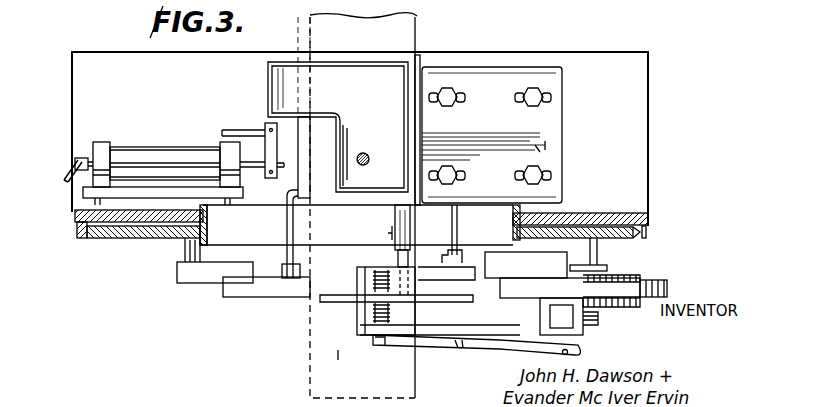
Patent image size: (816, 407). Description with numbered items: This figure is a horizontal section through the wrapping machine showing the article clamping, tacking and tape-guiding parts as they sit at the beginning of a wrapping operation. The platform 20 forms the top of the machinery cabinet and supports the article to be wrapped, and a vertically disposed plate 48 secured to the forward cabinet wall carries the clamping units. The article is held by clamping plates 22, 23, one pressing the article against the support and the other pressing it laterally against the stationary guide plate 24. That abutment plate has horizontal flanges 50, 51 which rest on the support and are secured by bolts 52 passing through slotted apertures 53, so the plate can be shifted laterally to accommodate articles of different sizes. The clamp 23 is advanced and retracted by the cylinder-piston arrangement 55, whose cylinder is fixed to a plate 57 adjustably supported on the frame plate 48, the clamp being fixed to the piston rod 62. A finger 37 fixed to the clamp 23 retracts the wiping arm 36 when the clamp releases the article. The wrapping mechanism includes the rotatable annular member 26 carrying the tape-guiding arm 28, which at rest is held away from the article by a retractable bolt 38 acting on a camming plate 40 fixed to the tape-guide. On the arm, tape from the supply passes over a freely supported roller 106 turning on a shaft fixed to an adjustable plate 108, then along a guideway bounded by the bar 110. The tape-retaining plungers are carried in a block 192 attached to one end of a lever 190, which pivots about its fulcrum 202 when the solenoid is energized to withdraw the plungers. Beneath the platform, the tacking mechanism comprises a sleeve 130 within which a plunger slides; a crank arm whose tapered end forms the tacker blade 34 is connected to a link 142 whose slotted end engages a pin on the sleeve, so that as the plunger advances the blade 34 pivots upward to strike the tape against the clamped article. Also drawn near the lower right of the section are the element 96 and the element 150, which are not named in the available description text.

The platform 20 is at (653, 88).
The clamping plate 22 is at (276, 80).
The clamping plate 23 is at (303, 146).
The stationary guide plate 24 is at (418, 66).
The rotatable annular member 26 is at (108, 241).
The tape-guiding arm 28 is at (304, 358).
The tacker blade 34 is at (395, 262).
The wiping arm 36 is at (257, 298).
The finger 37 is at (290, 216).
The retractable bolt 38 is at (451, 234).
The camming plate 40 is at (462, 262).
The vertically disposed plate 48 is at (77, 216).
The horizontal flange 50 is at (562, 112).
The horizontal flange 51 is at (563, 172).
The bolts 52 is at (532, 105).
The slotted apertures 53 is at (525, 92).
The cylinder-piston arrangement 55 is at (148, 157).
The plate 57 is at (80, 194).
The piston rod 62 is at (220, 166).
The housing 96 is at (586, 340).
The roller 106 is at (515, 290).
The plate 108 is at (567, 262).
The bar 110 is at (406, 305).
The sleeve 130 is at (404, 206).
The link 142 is at (390, 233).
The shaft 150 is at (659, 272).
The lever 190 is at (320, 333).
The block 192 is at (340, 354).
The fulcrum 202 is at (460, 350).